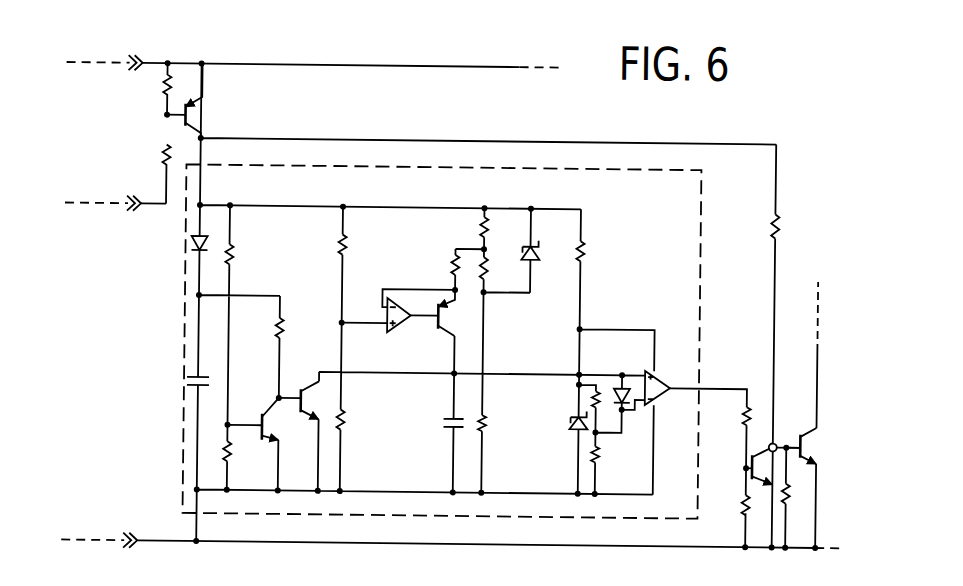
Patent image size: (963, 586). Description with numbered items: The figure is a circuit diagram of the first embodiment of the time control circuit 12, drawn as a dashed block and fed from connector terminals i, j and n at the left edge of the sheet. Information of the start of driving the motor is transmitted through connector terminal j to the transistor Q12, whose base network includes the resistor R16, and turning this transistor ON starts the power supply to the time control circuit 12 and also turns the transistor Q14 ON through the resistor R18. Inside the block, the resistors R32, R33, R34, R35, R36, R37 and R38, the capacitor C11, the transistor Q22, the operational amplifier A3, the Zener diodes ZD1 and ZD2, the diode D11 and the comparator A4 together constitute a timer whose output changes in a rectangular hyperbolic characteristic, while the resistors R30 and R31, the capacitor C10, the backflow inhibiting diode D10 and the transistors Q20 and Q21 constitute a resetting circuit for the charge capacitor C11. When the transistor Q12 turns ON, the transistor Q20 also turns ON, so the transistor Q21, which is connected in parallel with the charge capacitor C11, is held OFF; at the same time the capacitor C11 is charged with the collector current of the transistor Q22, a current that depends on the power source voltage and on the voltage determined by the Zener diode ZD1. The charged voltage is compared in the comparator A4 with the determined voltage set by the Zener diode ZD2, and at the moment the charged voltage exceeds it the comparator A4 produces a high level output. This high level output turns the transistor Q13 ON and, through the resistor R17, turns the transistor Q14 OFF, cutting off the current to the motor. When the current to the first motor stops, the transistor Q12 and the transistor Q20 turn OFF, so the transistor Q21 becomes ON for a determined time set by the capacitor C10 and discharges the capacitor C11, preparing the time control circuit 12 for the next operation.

The connector terminal i is at (137, 57).
The connector terminal j is at (137, 198).
The connector terminal n is at (137, 535).
The time control circuit 12 is at (185, 456).
The resistor R16 is at (166, 148).
The transistor Q12 is at (193, 117).
The backflow inhibiting diode D10 is at (192, 243).
The resistor R30 is at (236, 252).
The resistor R31 is at (284, 325).
The resistor R32 is at (339, 245).
The resistor R33 is at (348, 418).
The capacitor C10 is at (188, 381).
The transistor Q20 is at (266, 412).
The transistor Q21 is at (302, 388).
The operational amplifier A3 is at (395, 331).
The transistor Q22 is at (441, 328).
The resistor R34 is at (451, 267).
The resistor R35 is at (480, 228).
The resistor R36 is at (488, 268).
The Zener diode ZD1 is at (537, 258).
The charge capacitor C11 is at (447, 419).
The resistor R37 is at (593, 397).
The Zener diode ZD2 is at (571, 418).
The resistor R38 is at (593, 452).
The diode D11 is at (617, 388).
The comparator A4 is at (666, 375).
The resistor R18 is at (770, 230).
The resistor R17 is at (751, 403).
The transistor Q13 is at (750, 462).
The transistor Q14 is at (803, 430).